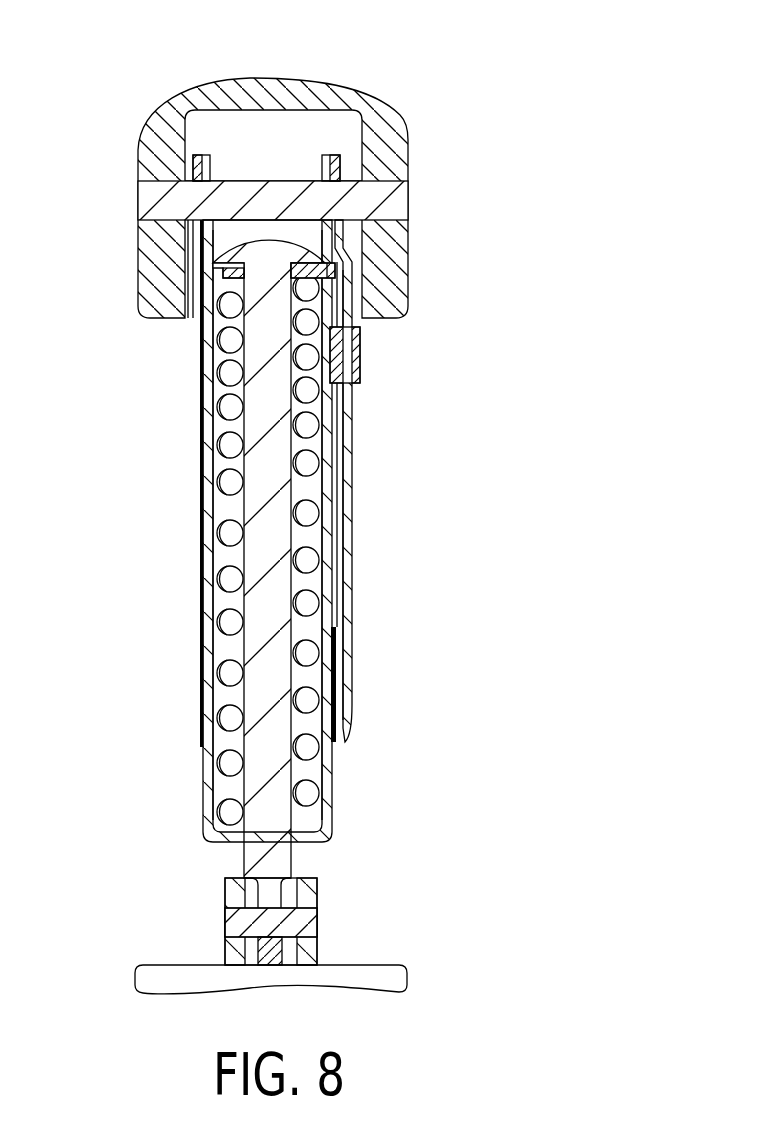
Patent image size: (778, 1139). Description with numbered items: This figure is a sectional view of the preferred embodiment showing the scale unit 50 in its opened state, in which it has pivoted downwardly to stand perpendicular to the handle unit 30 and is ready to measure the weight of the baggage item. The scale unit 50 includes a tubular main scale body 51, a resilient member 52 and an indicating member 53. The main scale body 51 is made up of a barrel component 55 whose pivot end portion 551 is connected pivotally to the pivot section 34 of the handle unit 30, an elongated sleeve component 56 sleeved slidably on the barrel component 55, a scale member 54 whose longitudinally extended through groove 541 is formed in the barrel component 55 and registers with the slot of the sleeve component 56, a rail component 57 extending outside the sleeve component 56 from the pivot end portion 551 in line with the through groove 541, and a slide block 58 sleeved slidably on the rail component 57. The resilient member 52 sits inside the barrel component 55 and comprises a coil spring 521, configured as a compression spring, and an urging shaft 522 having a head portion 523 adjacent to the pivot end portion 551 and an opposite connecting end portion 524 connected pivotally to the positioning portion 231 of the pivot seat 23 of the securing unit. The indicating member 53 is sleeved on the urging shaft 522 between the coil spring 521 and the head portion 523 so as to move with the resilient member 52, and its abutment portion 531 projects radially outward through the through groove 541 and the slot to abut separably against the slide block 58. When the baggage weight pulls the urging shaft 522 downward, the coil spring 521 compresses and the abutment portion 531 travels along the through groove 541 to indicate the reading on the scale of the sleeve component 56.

The handle unit 30 is at (404, 94).
The pivot section 34 is at (395, 175).
The pivot end portion 551 is at (318, 167).
The head portion 523 is at (273, 255).
The abutment portion 531 is at (336, 264).
The indicating member 53 is at (212, 272).
The resilient member 52 is at (208, 550).
The coil spring 521 is at (230, 578).
The scale unit 50 is at (272, 464).
The sleeve component 56 is at (203, 442).
The main scale body 51 is at (207, 488).
The barrel component 55 is at (212, 682).
The slide block 58 is at (356, 355).
The rail component 57 is at (349, 427).
The through groove 541 is at (324, 503).
The scale member 54 is at (334, 545).
The urging shaft 522 is at (322, 620).
The connecting end portion 524 is at (297, 870).
The positioning portion 231 is at (230, 900).
The pivot seat 23 is at (268, 921).